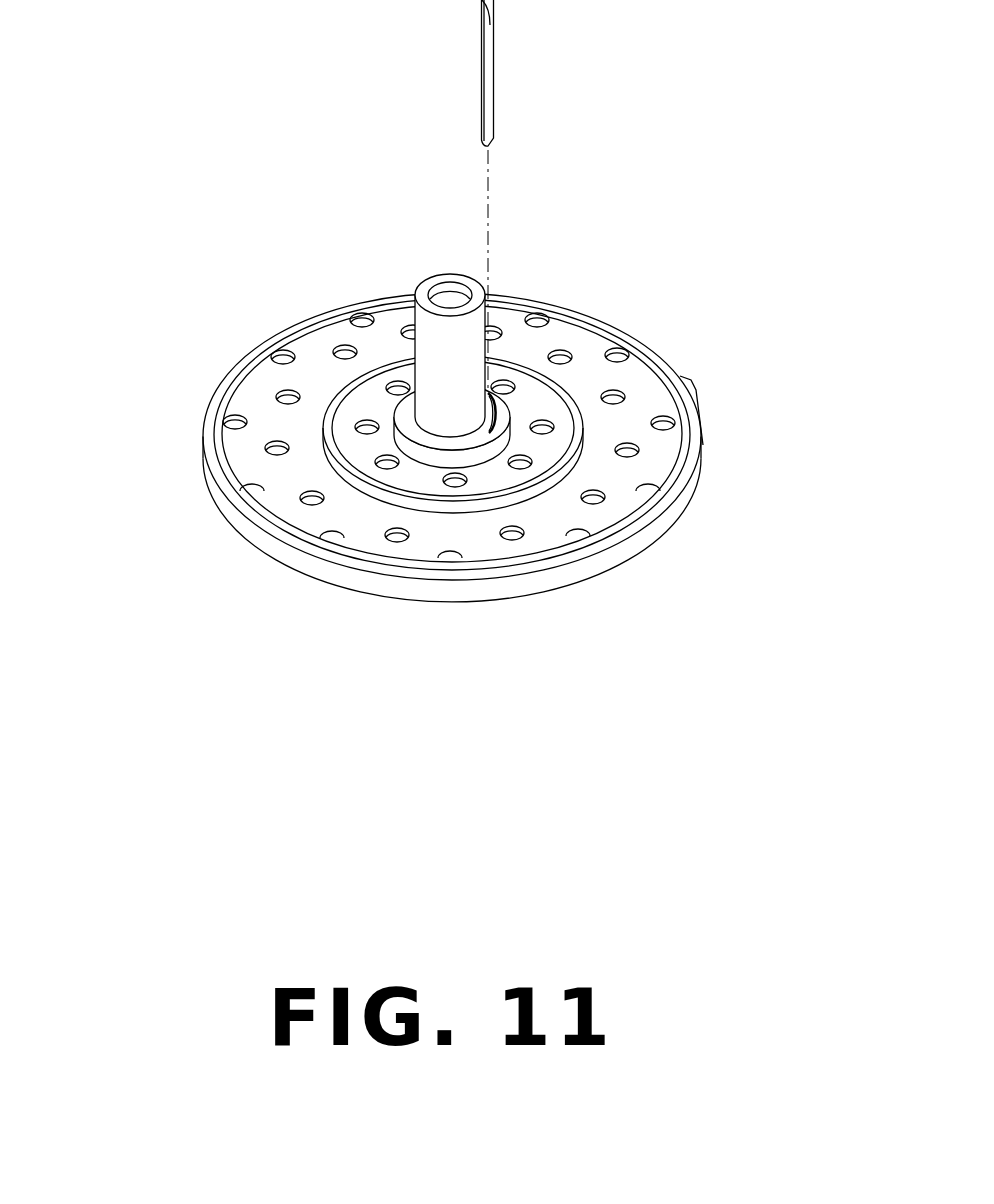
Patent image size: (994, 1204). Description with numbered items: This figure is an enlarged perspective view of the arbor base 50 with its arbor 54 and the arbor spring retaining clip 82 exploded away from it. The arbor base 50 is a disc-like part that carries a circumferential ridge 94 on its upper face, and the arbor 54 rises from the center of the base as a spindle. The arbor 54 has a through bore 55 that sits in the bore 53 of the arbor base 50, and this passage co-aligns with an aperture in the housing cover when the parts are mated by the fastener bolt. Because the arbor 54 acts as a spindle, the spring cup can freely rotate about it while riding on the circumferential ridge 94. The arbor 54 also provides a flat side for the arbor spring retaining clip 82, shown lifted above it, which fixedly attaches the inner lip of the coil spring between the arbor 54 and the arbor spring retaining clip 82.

The arbor base 50 is at (218, 390).
The bore of the arbor base 53 is at (488, 403).
The arbor 54 is at (425, 332).
The through bore 55 is at (457, 285).
The arbor spring retaining clip 82 is at (492, 62).
The circumferential ridge 94 is at (505, 365).